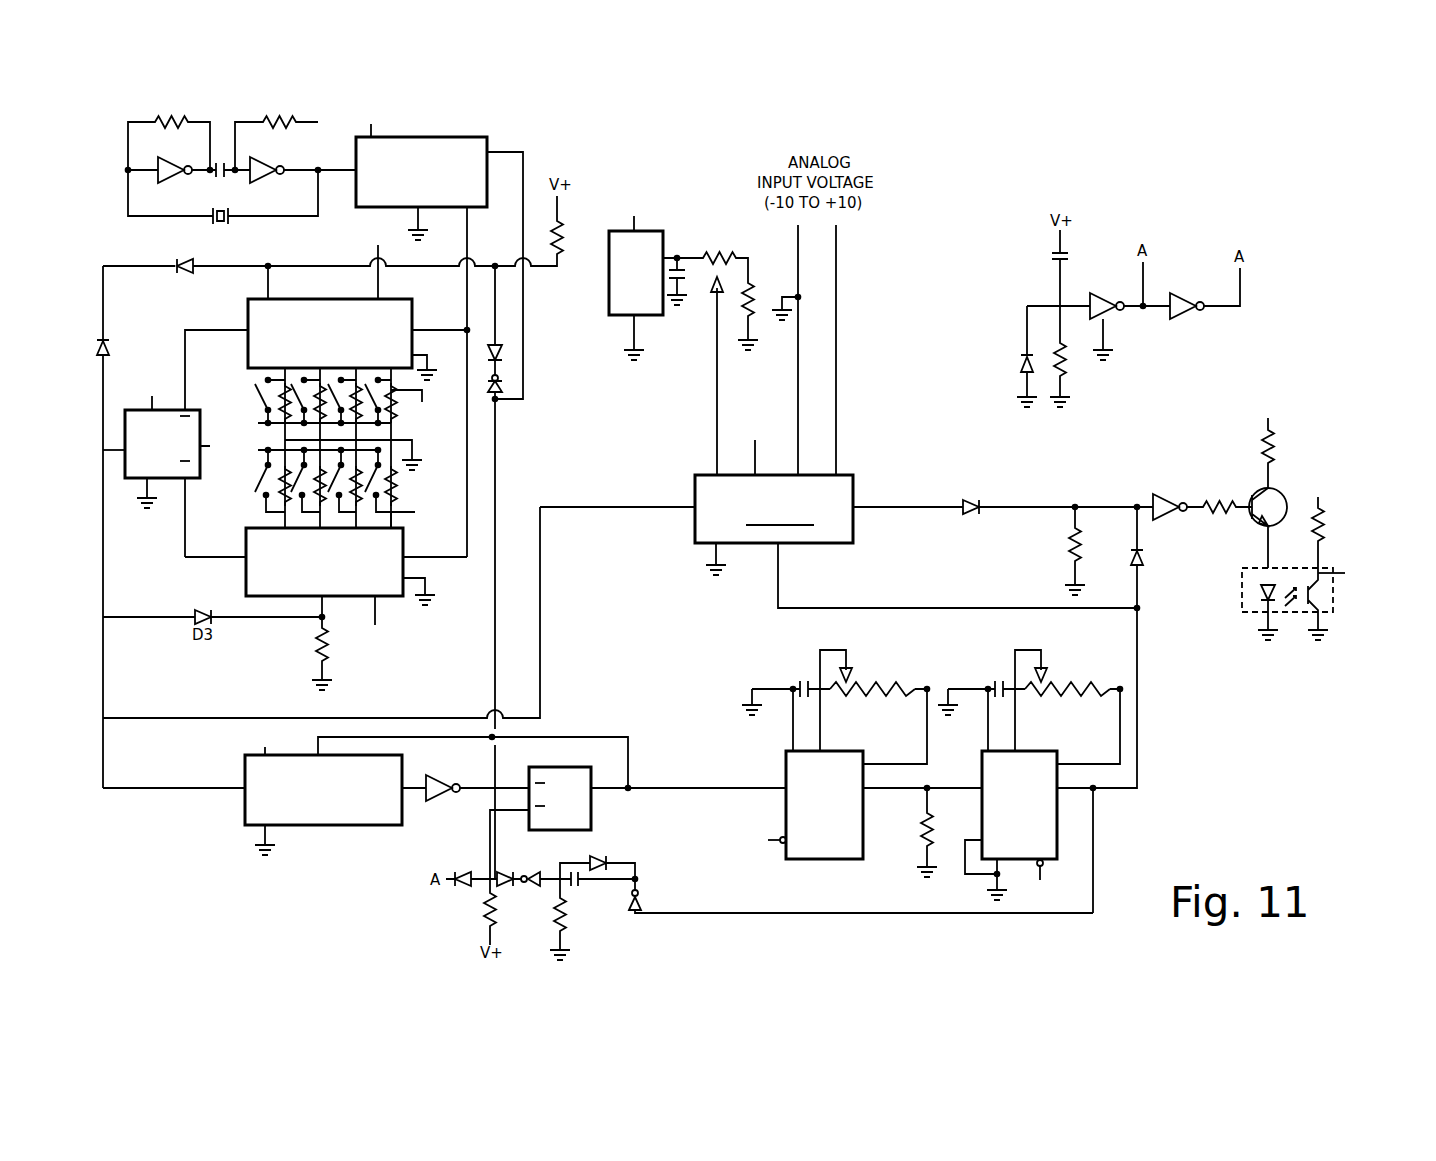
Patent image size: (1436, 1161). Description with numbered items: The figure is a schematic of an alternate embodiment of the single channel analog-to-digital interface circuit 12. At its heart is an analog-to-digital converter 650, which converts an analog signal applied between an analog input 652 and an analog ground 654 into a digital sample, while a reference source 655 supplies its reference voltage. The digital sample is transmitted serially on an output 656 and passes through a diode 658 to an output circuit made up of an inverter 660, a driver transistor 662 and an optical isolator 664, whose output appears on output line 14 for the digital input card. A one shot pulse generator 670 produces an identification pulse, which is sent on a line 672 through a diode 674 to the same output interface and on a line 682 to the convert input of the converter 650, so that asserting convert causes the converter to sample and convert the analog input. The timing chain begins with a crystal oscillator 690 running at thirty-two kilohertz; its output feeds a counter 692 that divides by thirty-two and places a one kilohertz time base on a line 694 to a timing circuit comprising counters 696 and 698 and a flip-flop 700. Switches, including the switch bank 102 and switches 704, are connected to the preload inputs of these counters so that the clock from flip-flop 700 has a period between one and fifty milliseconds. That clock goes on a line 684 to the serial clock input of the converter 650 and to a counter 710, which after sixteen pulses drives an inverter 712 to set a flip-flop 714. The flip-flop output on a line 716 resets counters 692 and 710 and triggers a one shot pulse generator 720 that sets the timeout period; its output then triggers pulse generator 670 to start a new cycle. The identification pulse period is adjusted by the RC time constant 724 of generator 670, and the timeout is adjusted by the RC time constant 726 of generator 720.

The crystal oscillator 690 is at (223, 112).
The counter 692 is at (475, 137).
The line 694 is at (462, 234).
The counter 696 is at (352, 298).
The counter 698 is at (246, 568).
The flip-flop 700 is at (130, 408).
The switches 102 is at (232, 383).
The switches 704 is at (260, 518).
The counter 710 is at (345, 826).
The inverter 712 is at (440, 800).
The flip-flop 714 is at (545, 767).
The line 716 is at (665, 788).
The one shot pulse generator 720 is at (786, 770).
The RC time constant 724 is at (1045, 666).
The RC time constant 726 is at (862, 666).
The one shot pulse generator 670 is at (982, 768).
The line 672 is at (1140, 770).
The diode 674 is at (1143, 572).
The line 682 is at (870, 608).
The line 684 is at (588, 507).
The analog-to-digital converter 650 is at (695, 532).
The analog input 652 is at (836, 267).
The analog ground 654 is at (798, 238).
The reference source 655 is at (609, 290).
The output 656 is at (930, 507).
The diode 658 is at (977, 516).
The inverter 660 is at (1168, 522).
The driver transistor 662 is at (1278, 493).
The optical isolator 664 is at (1242, 610).
The analog-to-digital interface circuit 12 is at (954, 216).
The output line 14 is at (1330, 578).